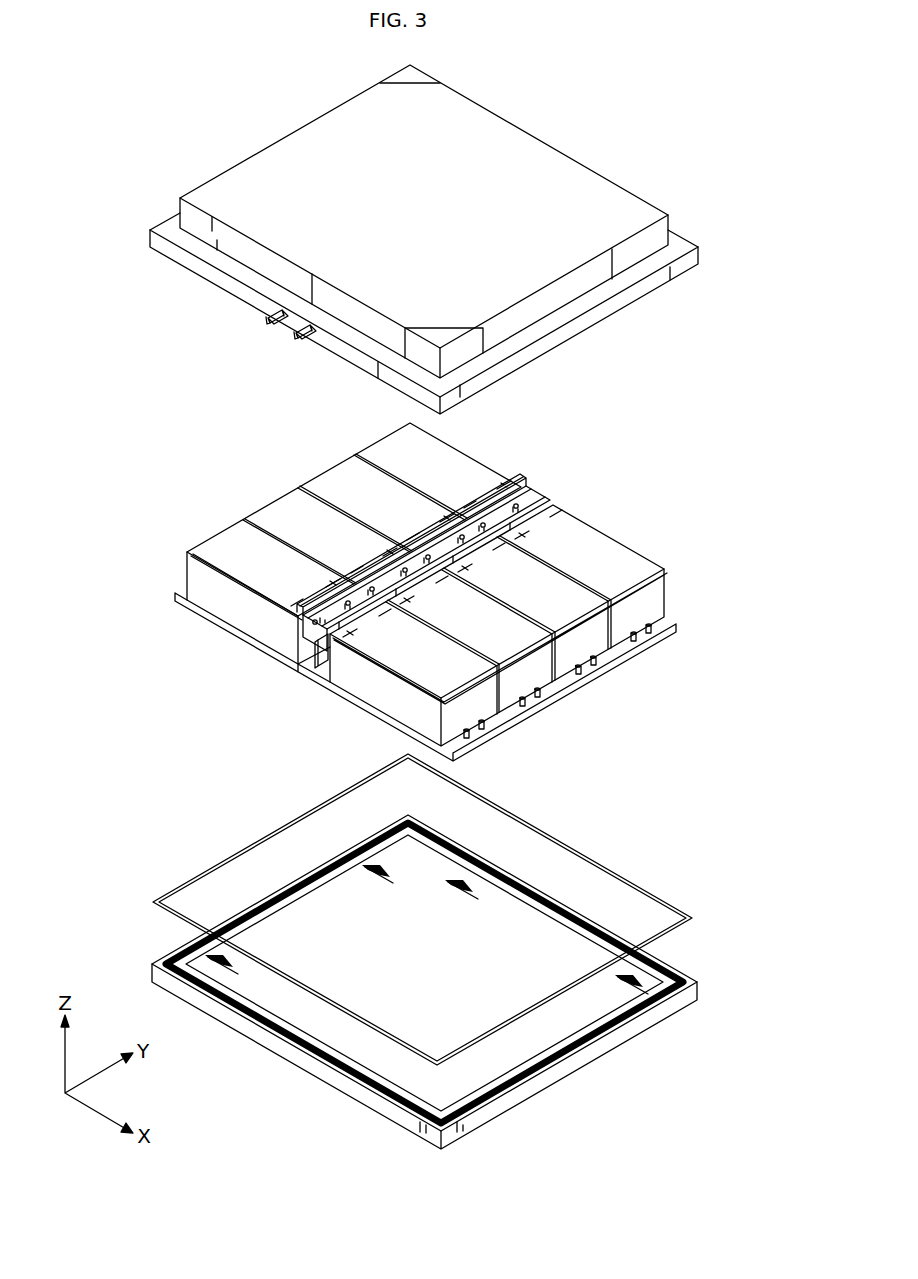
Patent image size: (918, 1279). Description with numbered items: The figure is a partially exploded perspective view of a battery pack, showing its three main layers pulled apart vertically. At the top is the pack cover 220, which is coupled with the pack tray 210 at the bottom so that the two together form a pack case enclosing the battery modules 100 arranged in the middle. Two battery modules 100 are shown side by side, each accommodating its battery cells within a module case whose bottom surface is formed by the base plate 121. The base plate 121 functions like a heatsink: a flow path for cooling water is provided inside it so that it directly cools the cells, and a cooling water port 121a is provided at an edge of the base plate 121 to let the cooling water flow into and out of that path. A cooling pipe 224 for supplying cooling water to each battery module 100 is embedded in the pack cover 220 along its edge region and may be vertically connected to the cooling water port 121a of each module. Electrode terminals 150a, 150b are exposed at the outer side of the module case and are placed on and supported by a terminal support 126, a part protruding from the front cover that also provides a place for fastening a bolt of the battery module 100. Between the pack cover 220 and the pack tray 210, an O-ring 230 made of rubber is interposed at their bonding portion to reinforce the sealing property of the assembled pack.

The pack cover 220 is at (547, 124).
The cooling pipe 224 is at (305, 340).
The battery module 100 is at (483, 453).
The electrode terminal 150a is at (528, 498).
The electrode terminal 150b is at (296, 628).
The terminal support 126 is at (320, 642).
The base plate 121 is at (372, 712).
The cooling water port 121a is at (660, 628).
The O-ring 230 is at (642, 889).
The pack tray 210 is at (687, 965).